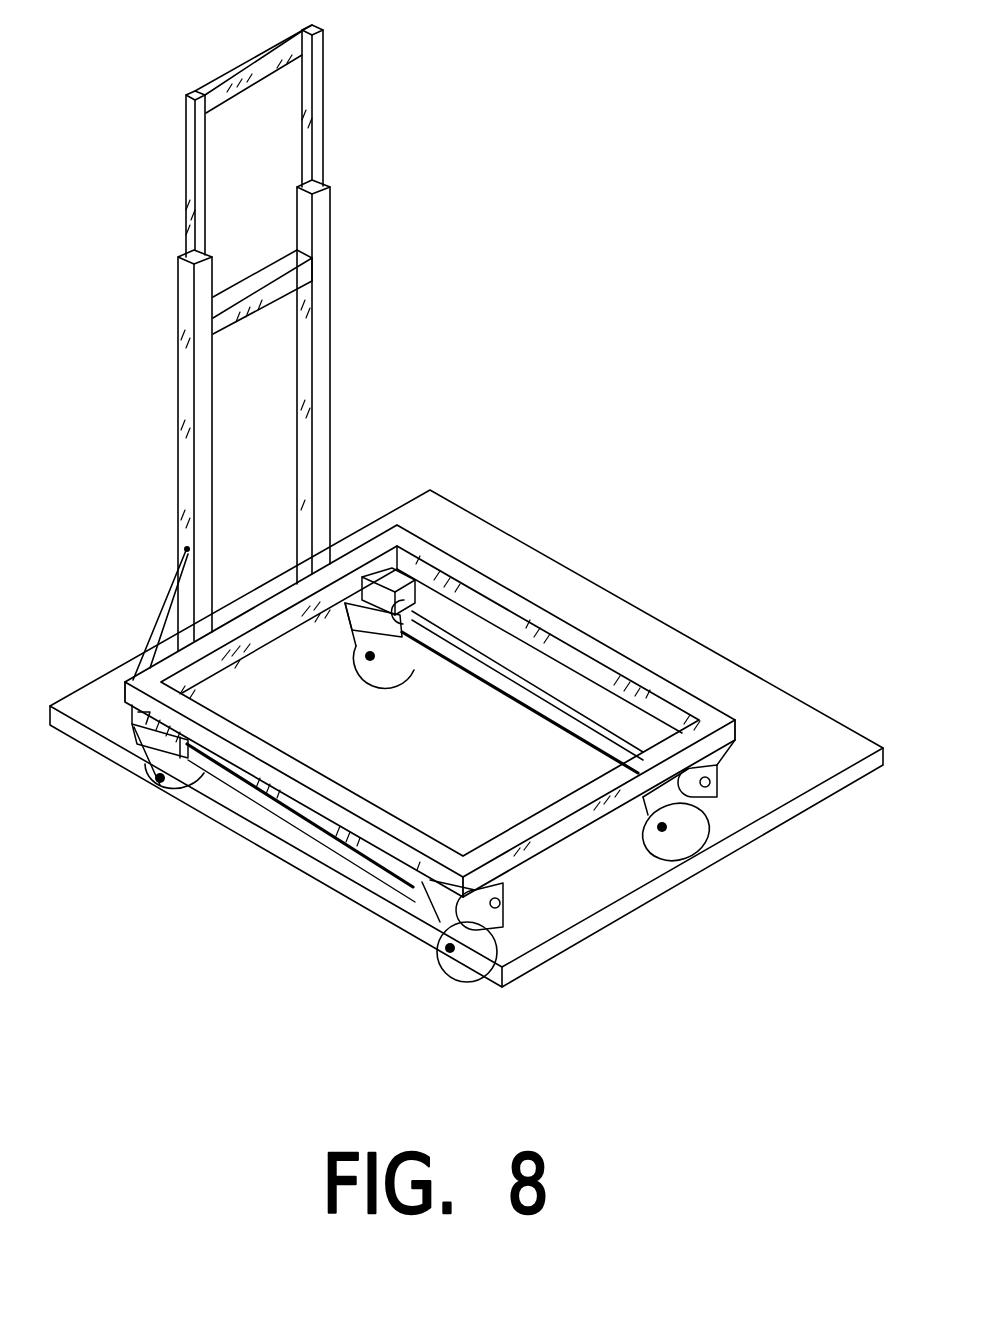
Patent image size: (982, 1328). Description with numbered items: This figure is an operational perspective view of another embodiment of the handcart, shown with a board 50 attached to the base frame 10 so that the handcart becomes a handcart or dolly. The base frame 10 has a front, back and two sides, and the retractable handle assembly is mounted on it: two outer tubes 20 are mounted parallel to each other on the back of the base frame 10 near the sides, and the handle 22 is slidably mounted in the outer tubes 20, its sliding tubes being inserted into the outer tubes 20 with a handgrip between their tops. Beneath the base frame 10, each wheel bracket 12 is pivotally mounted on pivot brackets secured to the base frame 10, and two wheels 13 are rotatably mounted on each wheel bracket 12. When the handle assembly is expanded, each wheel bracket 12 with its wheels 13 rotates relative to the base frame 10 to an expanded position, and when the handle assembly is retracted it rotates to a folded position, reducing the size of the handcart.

The base frame 10 is at (370, 833).
The wheel bracket 12 is at (430, 792).
The wheel 13 is at (465, 980).
The outer tube 20 is at (190, 438).
The handle 22 is at (162, 176).
The board 50 is at (617, 603).